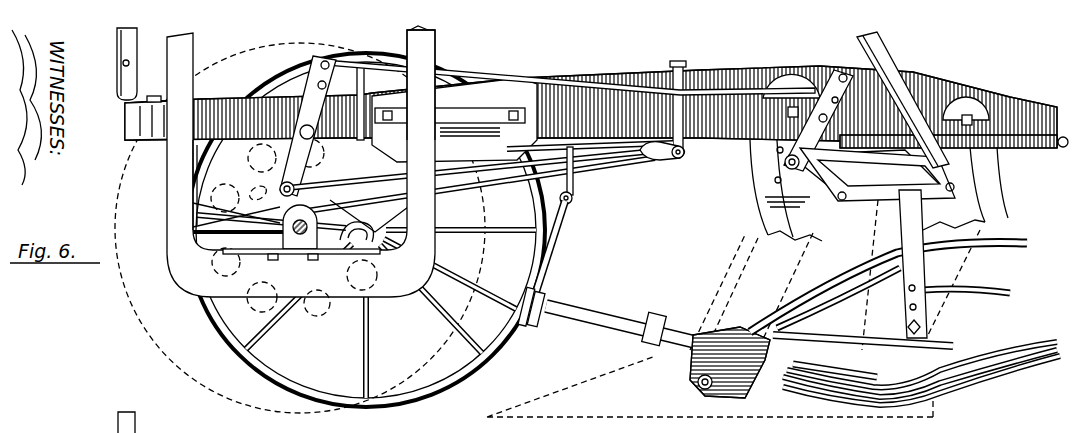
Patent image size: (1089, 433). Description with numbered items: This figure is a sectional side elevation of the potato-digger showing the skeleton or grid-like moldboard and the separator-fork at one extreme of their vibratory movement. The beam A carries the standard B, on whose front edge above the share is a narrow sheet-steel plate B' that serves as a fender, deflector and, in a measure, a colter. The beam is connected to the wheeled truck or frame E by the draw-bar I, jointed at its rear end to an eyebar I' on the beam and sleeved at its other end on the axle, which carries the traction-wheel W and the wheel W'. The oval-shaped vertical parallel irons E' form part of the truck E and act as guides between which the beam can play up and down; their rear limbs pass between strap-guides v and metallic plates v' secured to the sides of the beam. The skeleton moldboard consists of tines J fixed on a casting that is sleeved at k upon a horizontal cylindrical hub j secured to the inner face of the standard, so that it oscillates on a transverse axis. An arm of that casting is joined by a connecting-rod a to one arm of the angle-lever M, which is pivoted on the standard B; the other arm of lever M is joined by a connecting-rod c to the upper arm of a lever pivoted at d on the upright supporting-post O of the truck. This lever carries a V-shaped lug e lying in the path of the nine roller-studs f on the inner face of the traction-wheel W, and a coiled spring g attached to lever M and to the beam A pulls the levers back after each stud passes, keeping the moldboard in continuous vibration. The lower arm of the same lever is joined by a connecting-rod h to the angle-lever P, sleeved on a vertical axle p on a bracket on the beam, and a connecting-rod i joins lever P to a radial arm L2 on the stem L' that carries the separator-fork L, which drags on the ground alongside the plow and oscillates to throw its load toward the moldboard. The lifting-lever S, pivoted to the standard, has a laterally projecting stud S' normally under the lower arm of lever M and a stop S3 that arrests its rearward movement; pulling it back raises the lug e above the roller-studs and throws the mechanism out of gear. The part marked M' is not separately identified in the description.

The beam A is at (610, 57).
The standard B is at (883, 197).
The sheet-steel plate B' is at (828, 286).
The truck E is at (301, 171).
The vertical parallel irons E' is at (439, 83).
The draw-bar I is at (424, 195).
The eyebar I' is at (615, 164).
The tines J is at (1034, 243).
The separator-fork L is at (916, 372).
The supporting-stem L' is at (606, 313).
The radial arm L2 is at (562, 239).
The angle-lever M is at (321, 126).
The lever M' is at (831, 147).
The supporting-post O is at (280, 191).
The angle-lever P is at (668, 160).
The lifting-lever S is at (927, 115).
The stud S' is at (877, 188).
The stop S3 is at (942, 84).
The traction-wheel W is at (294, 228).
The wheel W' is at (353, 230).
The connecting-rod a is at (922, 253).
The connecting-rod c is at (557, 79).
The pivot d is at (299, 131).
The V-shaped lug e is at (360, 180).
The roller-studs f is at (316, 318).
The coiled spring g is at (1036, 149).
The connecting-rod h is at (624, 163).
The connecting-rod i is at (574, 201).
The cylindrical hub j is at (694, 378).
The sleeve k is at (721, 392).
The vertical axle p is at (693, 68).
The strap-guides v is at (454, 120).
The metallic plates v' is at (450, 104).